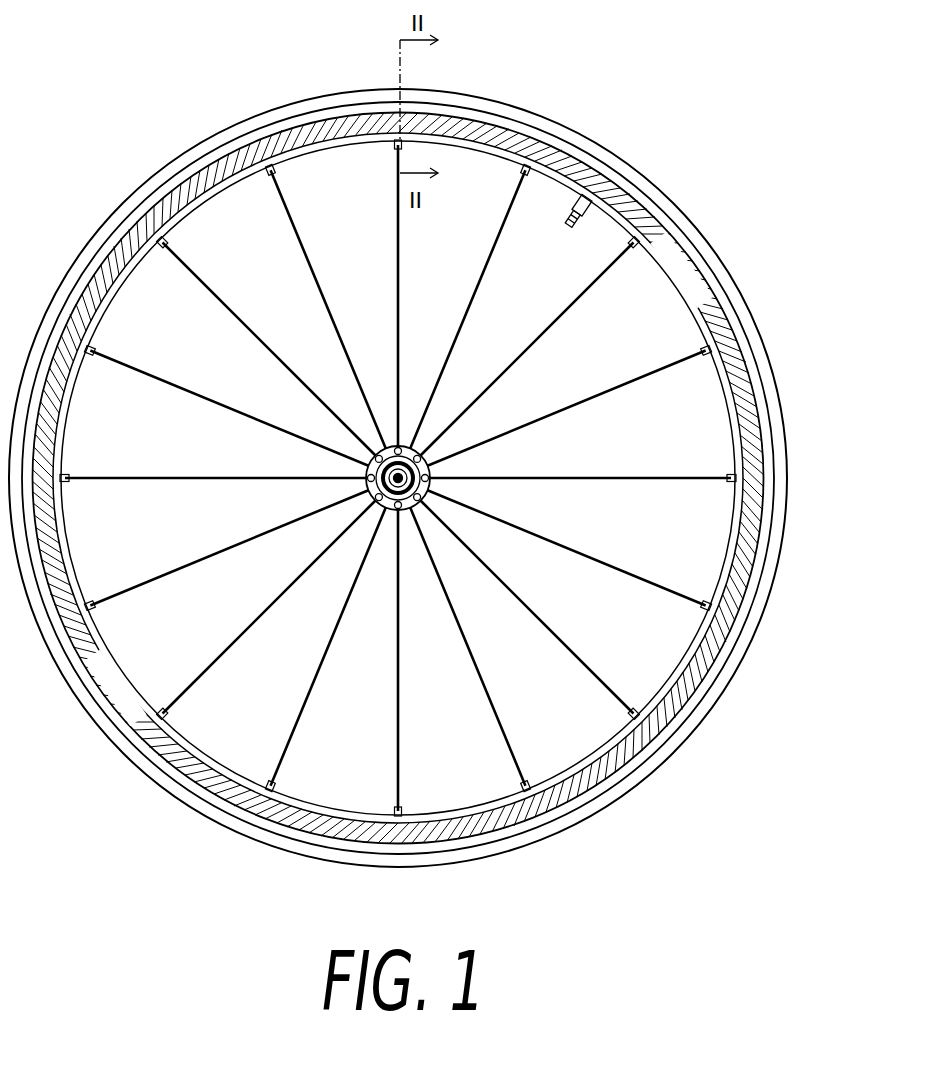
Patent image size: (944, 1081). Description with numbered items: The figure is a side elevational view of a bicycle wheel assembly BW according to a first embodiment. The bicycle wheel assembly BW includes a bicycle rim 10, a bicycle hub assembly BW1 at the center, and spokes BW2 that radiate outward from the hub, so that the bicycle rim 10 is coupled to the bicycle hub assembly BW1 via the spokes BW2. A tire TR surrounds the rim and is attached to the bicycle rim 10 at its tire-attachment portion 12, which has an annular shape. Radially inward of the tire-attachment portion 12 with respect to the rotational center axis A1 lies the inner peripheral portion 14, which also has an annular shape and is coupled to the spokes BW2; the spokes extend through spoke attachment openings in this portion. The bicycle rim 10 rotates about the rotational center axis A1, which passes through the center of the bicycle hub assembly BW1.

The bicycle wheel assembly BW is at (398, 450).
The tire TR is at (242, 120).
The bicycle rim 10 is at (330, 147).
The tire-attachment portion 12 is at (497, 110).
The inner peripheral portion 14 is at (487, 152).
The bicycle hub assembly BW1 is at (425, 476).
The spokes BW2 is at (314, 272).
The rotational center axis A1 is at (387, 473).